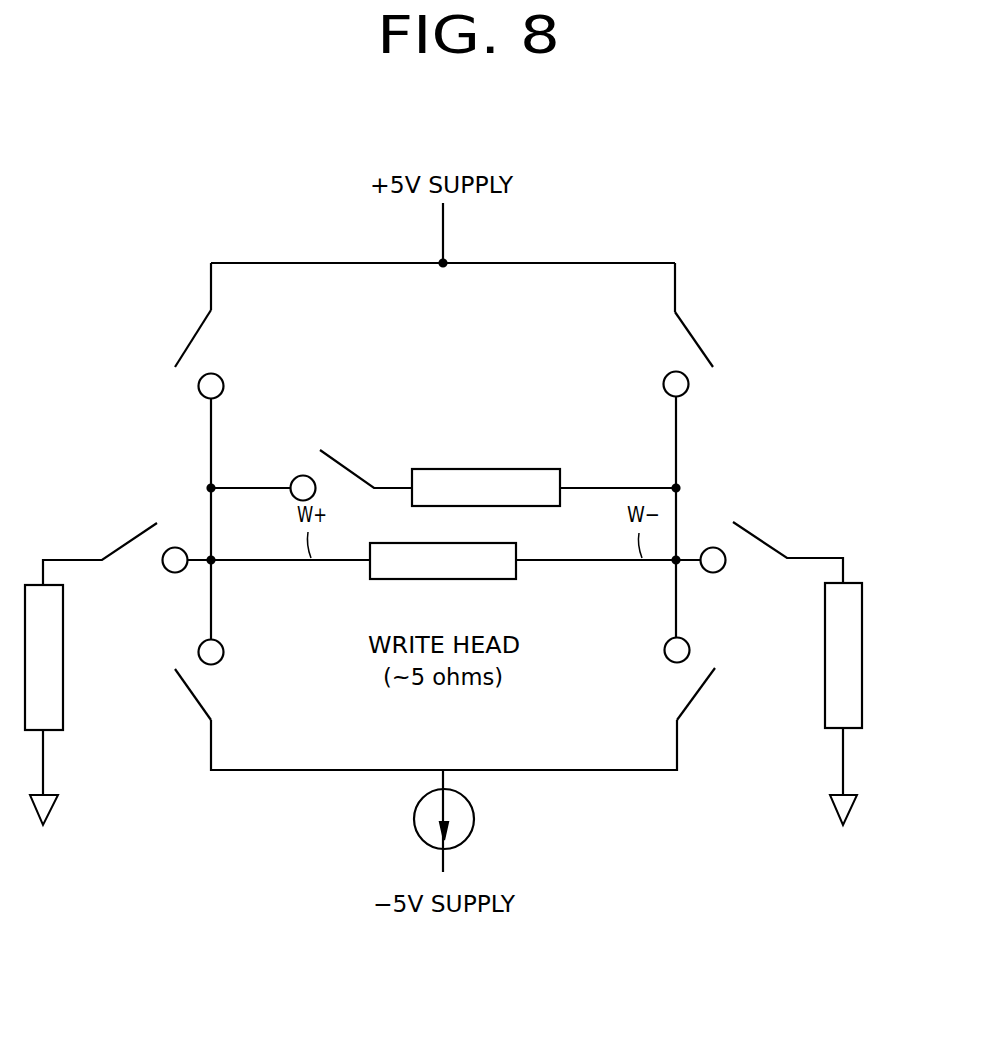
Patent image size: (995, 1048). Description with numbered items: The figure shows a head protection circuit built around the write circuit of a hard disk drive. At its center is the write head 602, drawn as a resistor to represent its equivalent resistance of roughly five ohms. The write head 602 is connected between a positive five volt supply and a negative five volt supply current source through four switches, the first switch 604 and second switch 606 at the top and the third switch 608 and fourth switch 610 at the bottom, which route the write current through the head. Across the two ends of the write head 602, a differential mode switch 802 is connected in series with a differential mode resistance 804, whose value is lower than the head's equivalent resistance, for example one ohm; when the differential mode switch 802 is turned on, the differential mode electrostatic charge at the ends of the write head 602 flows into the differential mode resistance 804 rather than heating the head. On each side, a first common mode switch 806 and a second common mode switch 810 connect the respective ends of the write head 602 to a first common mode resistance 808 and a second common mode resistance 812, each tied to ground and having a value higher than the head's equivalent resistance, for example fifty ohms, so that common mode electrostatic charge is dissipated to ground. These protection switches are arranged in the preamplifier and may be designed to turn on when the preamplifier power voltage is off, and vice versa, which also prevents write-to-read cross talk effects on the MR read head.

The write head 602 is at (517, 548).
The first switch 604 is at (203, 348).
The second switch 606 is at (698, 335).
The third switch 608 is at (205, 692).
The fourth switch 610 is at (695, 662).
The differential mode switch 802 is at (350, 460).
The differential mode resistance 804 is at (548, 468).
The first common mode switch 806 is at (122, 542).
The first common mode resistance 808 is at (63, 680).
The second common mode switch 810 is at (760, 537).
The second common mode resistance 812 is at (862, 637).